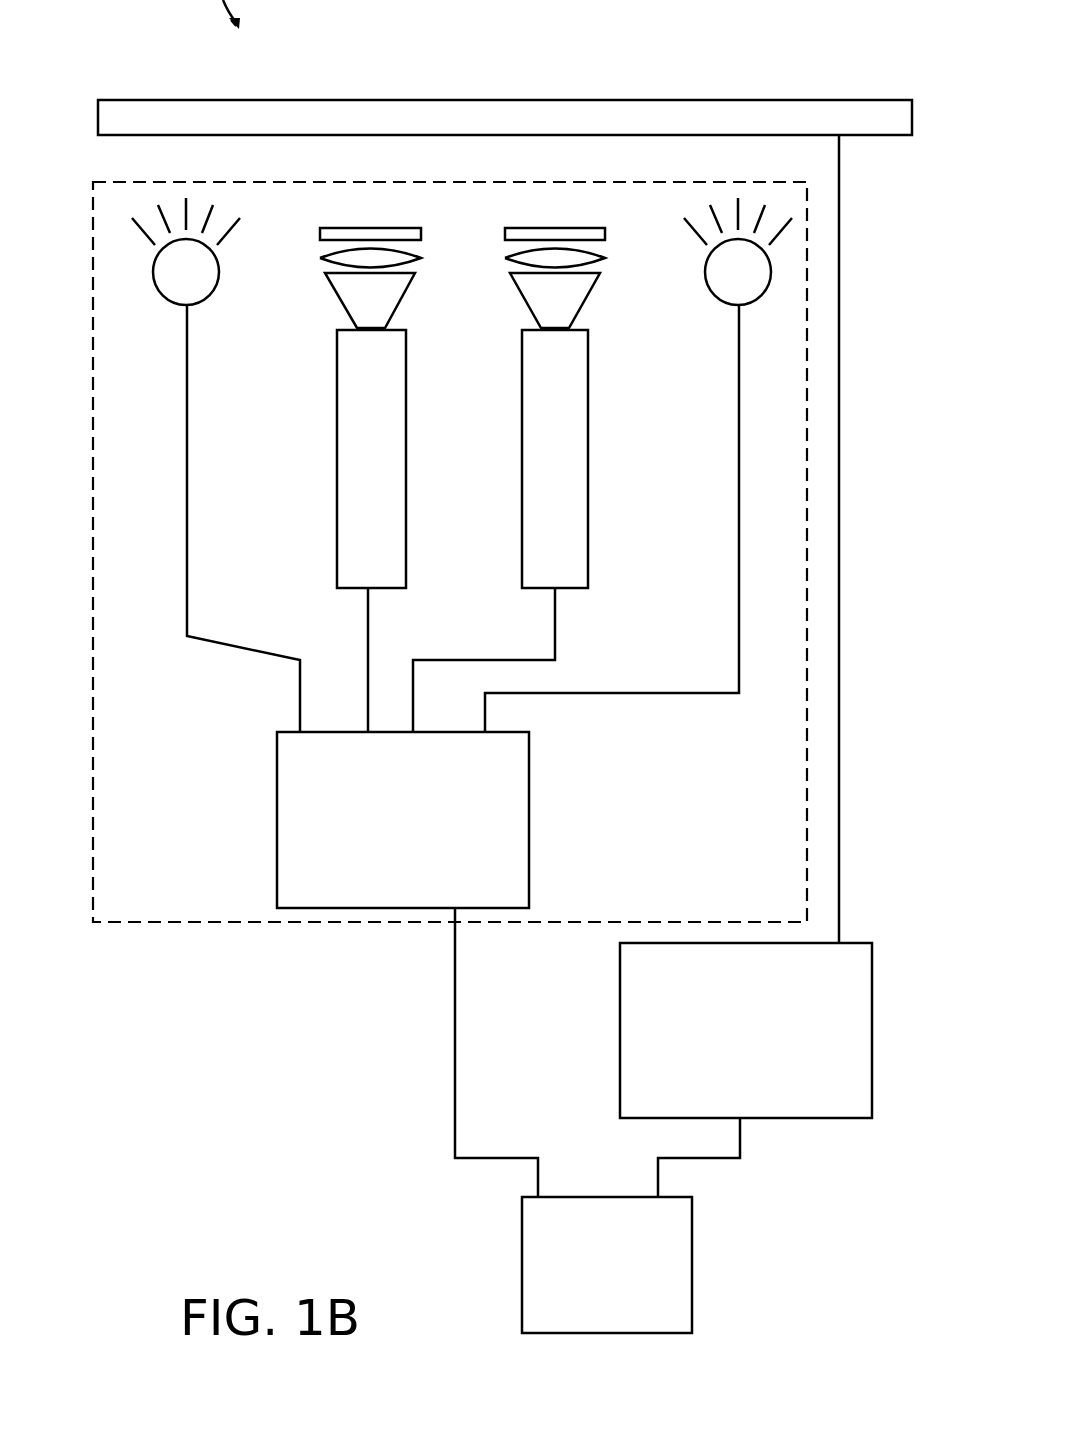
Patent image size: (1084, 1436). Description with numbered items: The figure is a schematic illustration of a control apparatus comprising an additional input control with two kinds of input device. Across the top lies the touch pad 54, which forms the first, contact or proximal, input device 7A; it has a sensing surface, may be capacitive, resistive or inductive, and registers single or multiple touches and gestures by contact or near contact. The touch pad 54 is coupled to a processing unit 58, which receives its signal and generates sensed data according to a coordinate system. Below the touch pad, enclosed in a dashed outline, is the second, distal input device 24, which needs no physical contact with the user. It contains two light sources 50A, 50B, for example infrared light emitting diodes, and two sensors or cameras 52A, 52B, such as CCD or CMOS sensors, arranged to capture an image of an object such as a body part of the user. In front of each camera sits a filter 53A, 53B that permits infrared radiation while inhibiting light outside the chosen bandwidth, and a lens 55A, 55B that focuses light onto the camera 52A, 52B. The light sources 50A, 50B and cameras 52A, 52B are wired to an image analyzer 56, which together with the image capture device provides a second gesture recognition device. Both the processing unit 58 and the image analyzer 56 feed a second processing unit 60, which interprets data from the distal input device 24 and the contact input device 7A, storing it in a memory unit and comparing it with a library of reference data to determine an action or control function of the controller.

The distal input device 24 is at (218, 923).
The touch pad 54 is at (167, 99).
The contact input device 7A is at (780, 118).
The light source 50A is at (185, 282).
The light source 50B is at (735, 282).
The filter 53A is at (373, 227).
The filter 53B is at (562, 227).
The lens 55A is at (397, 258).
The lens 55B is at (587, 257).
The camera 52A is at (370, 502).
The camera 52B is at (506, 502).
The image analyzer 56 is at (407, 964).
The processing unit 58 is at (746, 1070).
The second processing unit 60 is at (607, 1265).